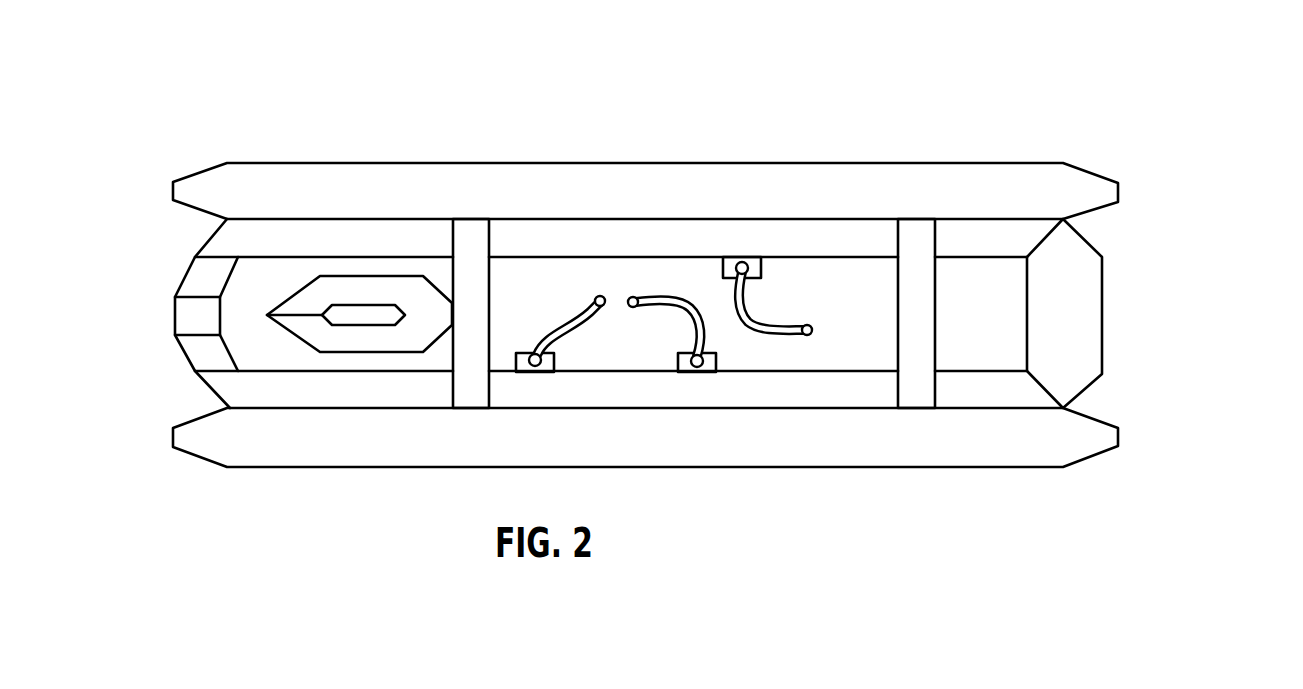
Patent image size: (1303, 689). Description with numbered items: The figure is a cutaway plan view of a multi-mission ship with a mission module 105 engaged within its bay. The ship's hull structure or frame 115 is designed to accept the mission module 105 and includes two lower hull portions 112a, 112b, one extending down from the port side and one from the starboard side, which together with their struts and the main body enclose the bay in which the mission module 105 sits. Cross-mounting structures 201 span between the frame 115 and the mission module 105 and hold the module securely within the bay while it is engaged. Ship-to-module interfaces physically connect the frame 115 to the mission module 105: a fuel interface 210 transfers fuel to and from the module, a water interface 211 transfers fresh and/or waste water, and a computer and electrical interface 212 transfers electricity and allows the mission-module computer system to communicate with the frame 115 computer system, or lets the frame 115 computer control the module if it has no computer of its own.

The mission module 105 is at (173, 313).
The lower hull portion 112a is at (672, 467).
The lower hull portion 112b is at (657, 163).
The hull structure or frame 115 is at (1125, 420).
The cross-mounting structures 201 is at (472, 238).
The fuel interface 210 is at (577, 312).
The water interface 211 is at (658, 310).
The computer and electrical interface 212 is at (810, 323).